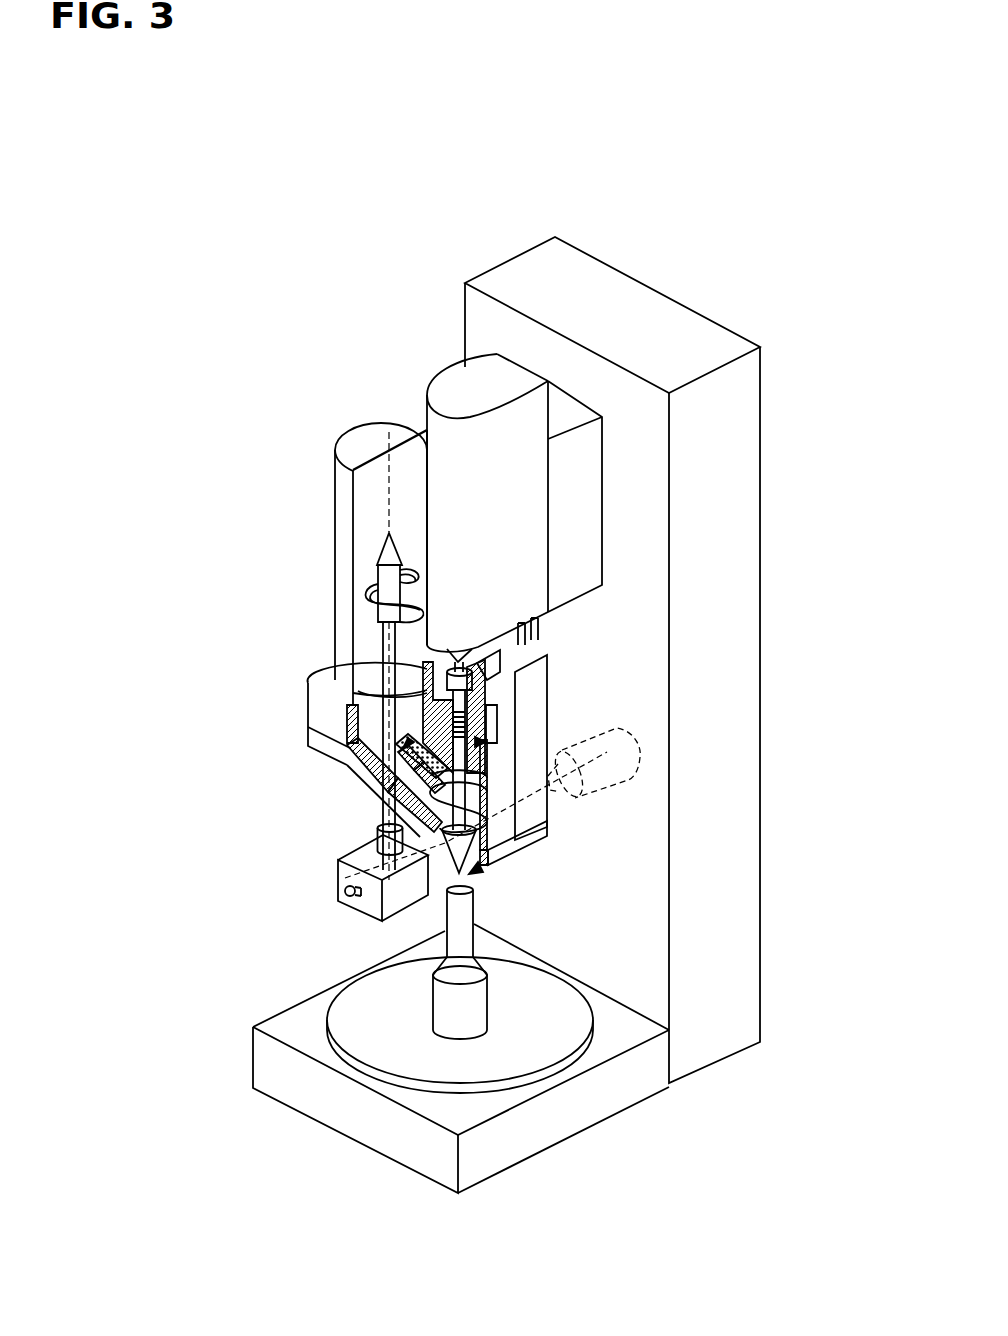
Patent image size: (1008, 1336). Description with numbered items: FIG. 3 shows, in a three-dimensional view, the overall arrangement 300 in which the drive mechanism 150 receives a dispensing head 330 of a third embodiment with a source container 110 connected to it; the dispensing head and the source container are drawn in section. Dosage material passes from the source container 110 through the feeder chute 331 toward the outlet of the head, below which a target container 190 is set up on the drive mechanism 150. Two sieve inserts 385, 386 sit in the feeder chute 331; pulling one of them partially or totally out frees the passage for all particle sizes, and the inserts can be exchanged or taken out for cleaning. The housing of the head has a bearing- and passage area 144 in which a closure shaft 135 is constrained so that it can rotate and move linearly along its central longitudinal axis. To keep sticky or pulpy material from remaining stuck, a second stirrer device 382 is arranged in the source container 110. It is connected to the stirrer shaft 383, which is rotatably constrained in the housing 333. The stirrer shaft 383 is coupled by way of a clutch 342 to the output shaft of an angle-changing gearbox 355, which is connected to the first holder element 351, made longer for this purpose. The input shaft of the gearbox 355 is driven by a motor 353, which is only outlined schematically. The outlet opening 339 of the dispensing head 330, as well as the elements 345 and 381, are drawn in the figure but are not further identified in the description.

The dispensing system 300 is at (388, 218).
The drive mechanism 150 is at (643, 331).
The source container 110 is at (372, 443).
The second stirrer device 382 is at (382, 577).
The stirrer shaft 383 is at (389, 650).
The sieve insert 385 is at (386, 782).
The dosing head 330 is at (284, 738).
The sieve insert 386 is at (396, 773).
The housing 333 is at (372, 789).
The feeder chute 331 is at (389, 798).
The clutch 342 is at (378, 840).
The angle-changing gearbox 355 is at (372, 901).
The closure shaft 135 is at (470, 704).
The bearing- and passage area 144 is at (485, 750).
The guide 345 is at (497, 757).
The motor 353 is at (613, 758).
The feed screw 381 is at (468, 811).
The first holder element 351 is at (520, 866).
The outlet nozzle 339 is at (500, 852).
The target container 190 is at (467, 1007).